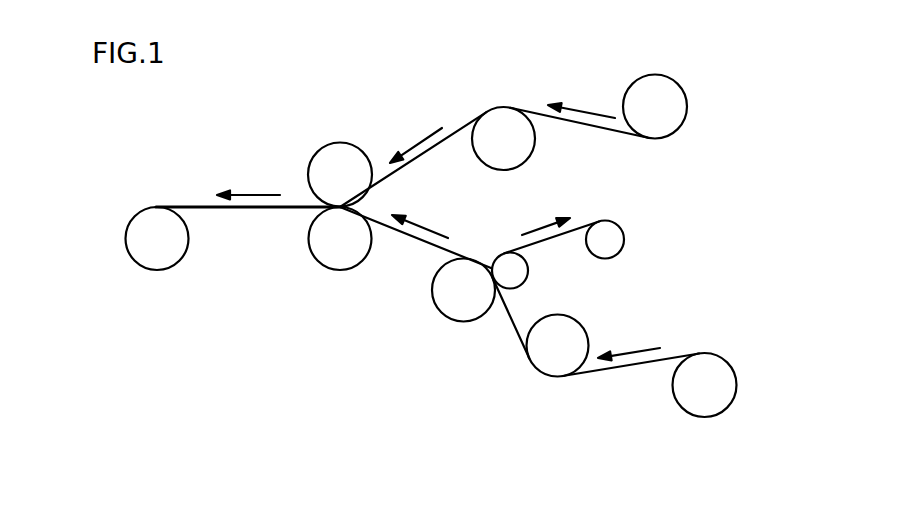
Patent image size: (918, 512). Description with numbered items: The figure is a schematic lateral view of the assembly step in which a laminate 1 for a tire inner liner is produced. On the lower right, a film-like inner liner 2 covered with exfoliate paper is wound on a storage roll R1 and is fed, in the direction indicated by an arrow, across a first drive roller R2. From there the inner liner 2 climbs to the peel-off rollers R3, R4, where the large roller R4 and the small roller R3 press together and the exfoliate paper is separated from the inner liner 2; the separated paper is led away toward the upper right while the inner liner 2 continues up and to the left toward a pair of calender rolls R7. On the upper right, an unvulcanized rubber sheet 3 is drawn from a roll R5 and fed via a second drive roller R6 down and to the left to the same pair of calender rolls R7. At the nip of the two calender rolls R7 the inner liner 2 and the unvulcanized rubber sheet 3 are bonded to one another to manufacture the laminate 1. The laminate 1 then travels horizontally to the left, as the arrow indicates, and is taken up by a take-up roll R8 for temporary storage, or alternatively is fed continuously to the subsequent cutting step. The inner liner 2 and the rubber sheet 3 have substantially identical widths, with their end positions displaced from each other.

The laminate 1 is at (192, 206).
The inner liner 2 is at (595, 374).
The unvulcanized rubber sheet 3 is at (613, 133).
The storage roll R1 is at (737, 385).
The first drive roller R2 is at (583, 322).
The peel-off roller R3 is at (528, 274).
The peel-off roller R4 is at (463, 322).
The supply roll of web 3 R5 is at (687, 107).
The second drive roller R6 is at (527, 160).
The calender rolls R7 is at (340, 142).
The take-up roll R8 is at (157, 270).